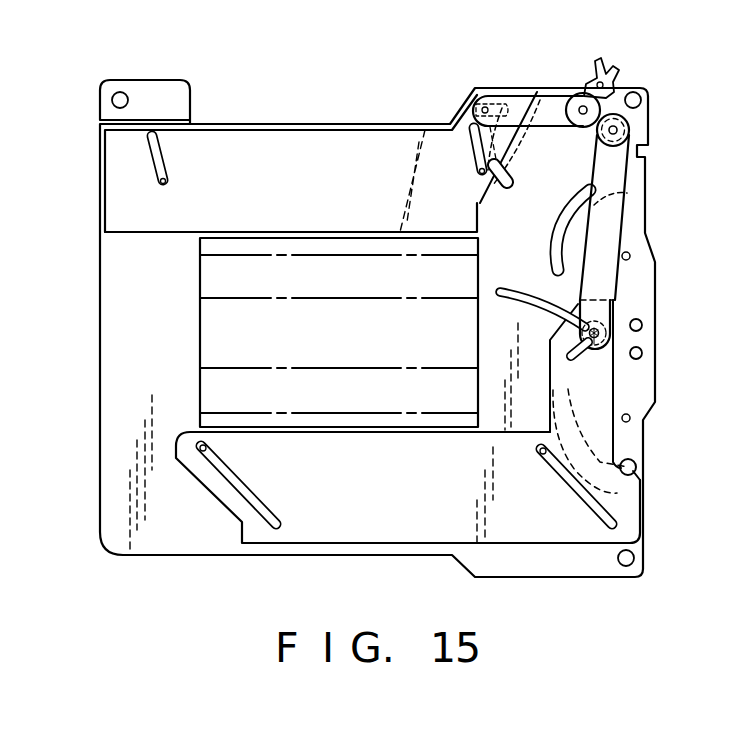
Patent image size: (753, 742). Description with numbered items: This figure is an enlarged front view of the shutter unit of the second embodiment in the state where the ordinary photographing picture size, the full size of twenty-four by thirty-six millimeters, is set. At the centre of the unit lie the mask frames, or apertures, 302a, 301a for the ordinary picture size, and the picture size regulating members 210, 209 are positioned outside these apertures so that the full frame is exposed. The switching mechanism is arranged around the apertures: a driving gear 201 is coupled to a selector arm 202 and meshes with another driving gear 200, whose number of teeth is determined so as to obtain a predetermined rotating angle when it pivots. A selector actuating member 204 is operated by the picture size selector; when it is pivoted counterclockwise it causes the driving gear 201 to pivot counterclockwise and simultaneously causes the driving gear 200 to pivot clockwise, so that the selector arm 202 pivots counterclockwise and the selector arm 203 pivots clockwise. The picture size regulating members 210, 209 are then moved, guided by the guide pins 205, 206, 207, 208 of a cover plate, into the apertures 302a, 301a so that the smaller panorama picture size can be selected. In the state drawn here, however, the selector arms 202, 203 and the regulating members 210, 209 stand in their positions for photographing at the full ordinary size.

The driving gear 200 is at (623, 90).
The driving gear 201 is at (577, 92).
The selector arm 202 is at (518, 100).
The selector arm 203 is at (607, 232).
The selector actuating member 204 is at (600, 60).
The guide pin 205 is at (541, 452).
The guide pin 206 is at (200, 448).
The guide pin 207 is at (161, 182).
The guide pin 208 is at (471, 166).
The picture size regulating member 209 is at (305, 522).
The picture size regulating member 210 is at (245, 158).
The mask frame 302a is at (339, 332).
The mask frame 301a is at (258, 425).